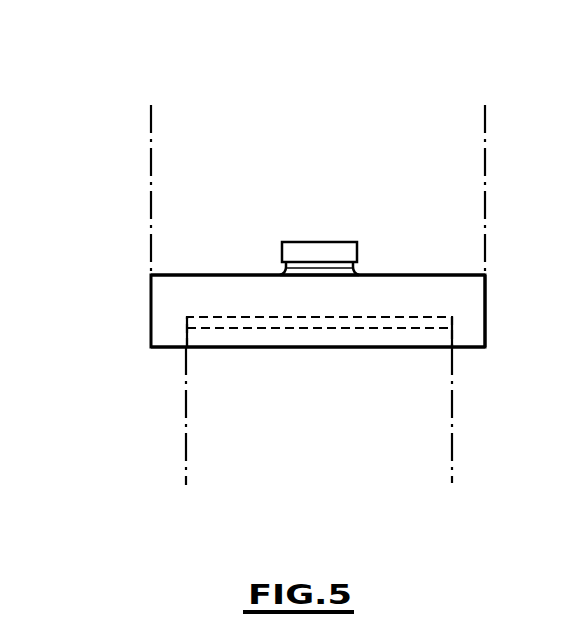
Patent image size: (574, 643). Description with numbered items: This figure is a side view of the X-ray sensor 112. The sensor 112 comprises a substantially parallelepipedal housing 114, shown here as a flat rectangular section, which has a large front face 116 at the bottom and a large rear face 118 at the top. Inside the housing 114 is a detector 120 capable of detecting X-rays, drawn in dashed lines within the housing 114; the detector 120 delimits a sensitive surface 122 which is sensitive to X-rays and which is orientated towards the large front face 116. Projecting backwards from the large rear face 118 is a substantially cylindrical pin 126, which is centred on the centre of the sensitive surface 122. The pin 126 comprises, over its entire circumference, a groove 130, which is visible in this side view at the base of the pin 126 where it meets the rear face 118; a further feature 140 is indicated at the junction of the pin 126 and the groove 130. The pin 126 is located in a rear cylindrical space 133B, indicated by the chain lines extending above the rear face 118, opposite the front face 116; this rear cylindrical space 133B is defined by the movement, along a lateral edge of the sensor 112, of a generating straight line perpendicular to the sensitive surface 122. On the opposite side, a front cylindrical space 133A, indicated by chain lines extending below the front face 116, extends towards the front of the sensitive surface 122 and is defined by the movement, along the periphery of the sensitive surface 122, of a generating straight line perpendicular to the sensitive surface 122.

The sensor 112 is at (123, 328).
The housing 114 is at (193, 302).
The large front face 116 is at (172, 355).
The large rear face 118 is at (410, 275).
The detector 120 is at (437, 320).
The sensitive surface 122 is at (297, 333).
The pin 126 is at (330, 257).
The groove 130 is at (283, 273).
The interface 140 is at (299, 268).
The front cylindrical space 133A is at (277, 432).
The rear cylindrical space 133B is at (231, 120).